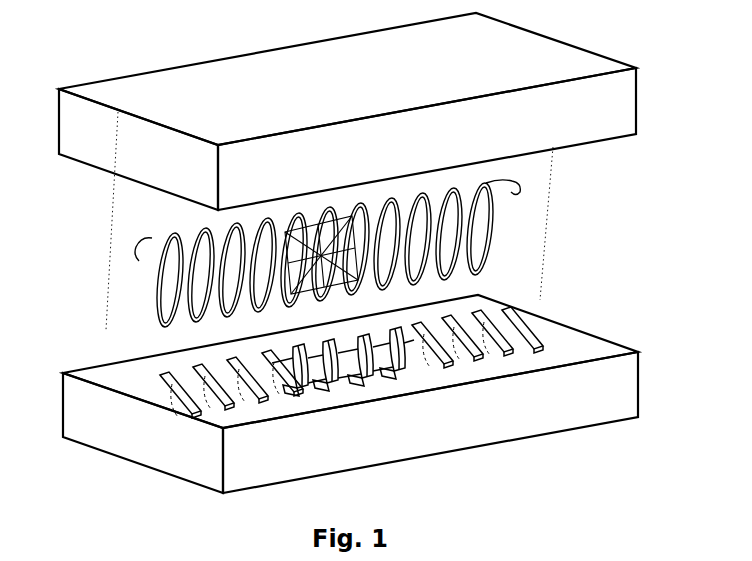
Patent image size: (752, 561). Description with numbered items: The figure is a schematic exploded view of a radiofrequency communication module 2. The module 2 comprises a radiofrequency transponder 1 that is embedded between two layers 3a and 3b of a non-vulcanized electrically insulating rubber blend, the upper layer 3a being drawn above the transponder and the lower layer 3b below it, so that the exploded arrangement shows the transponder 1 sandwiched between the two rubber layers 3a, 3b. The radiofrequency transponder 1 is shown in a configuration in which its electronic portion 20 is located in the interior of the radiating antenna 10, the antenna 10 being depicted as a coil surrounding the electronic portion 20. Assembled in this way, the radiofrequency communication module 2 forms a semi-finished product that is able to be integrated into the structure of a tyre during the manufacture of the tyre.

The radiofrequency transponder 1 is at (312, 231).
The radiofrequency communication module 2 is at (535, 30).
The layer of non-vulcanized electrically insulating rubber blend 3a is at (218, 107).
The layer of non-vulcanized electrically insulating rubber blend 3b is at (550, 424).
The radiating antenna 10 is at (526, 190).
The electronic portion 20 is at (280, 299).